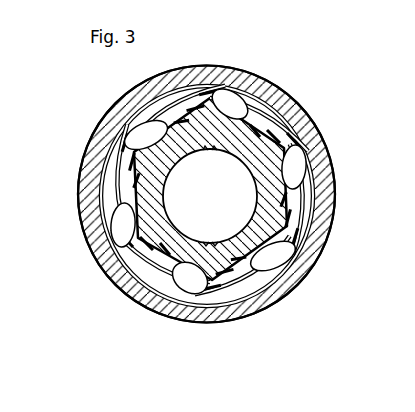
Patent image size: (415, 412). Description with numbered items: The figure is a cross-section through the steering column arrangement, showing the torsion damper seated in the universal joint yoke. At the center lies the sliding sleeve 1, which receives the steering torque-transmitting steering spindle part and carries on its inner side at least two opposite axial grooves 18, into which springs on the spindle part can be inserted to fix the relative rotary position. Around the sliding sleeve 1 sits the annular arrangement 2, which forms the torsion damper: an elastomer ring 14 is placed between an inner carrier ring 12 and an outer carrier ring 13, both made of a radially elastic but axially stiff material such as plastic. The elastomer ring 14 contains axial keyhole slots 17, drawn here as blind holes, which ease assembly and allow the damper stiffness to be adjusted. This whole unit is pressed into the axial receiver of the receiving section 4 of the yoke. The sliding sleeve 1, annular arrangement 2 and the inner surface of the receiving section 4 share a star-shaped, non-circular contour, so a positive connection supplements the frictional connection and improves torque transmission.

The sliding sleeve 1 is at (271, 224).
The annular arrangement 2 is at (101, 261).
The receiving section 4 is at (278, 100).
The inner carrier ring 12 is at (258, 310).
The outer carrier ring 13 is at (226, 323).
The elastomer ring 14 is at (128, 283).
The keyhole slots 17 is at (170, 310).
The axial grooves 18 is at (203, 152).